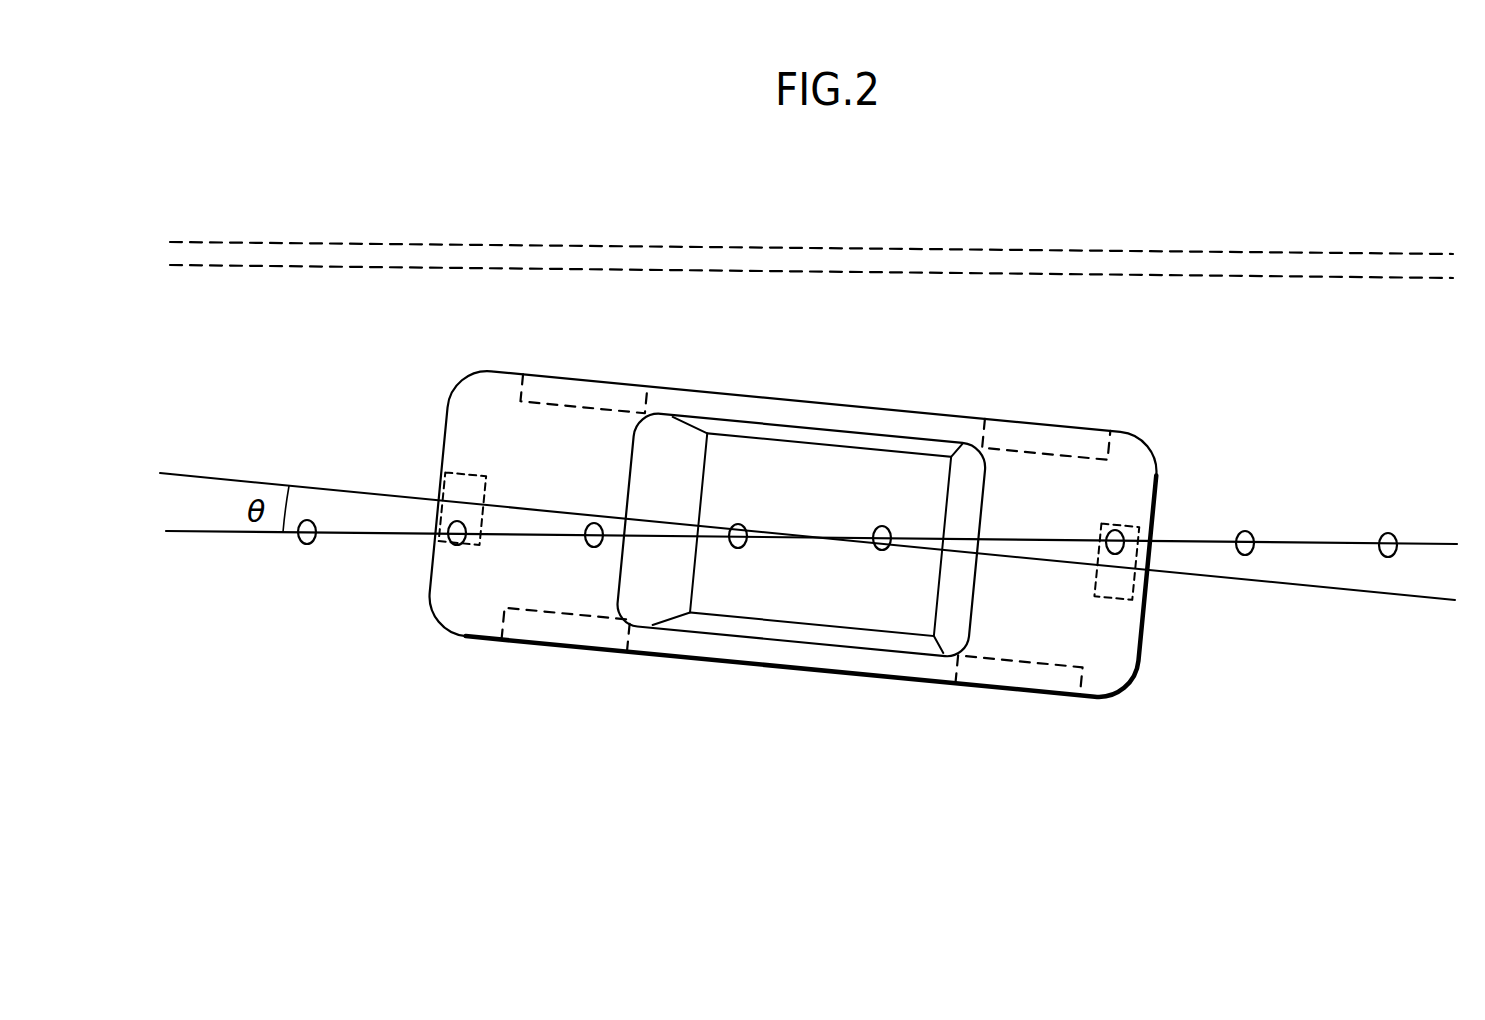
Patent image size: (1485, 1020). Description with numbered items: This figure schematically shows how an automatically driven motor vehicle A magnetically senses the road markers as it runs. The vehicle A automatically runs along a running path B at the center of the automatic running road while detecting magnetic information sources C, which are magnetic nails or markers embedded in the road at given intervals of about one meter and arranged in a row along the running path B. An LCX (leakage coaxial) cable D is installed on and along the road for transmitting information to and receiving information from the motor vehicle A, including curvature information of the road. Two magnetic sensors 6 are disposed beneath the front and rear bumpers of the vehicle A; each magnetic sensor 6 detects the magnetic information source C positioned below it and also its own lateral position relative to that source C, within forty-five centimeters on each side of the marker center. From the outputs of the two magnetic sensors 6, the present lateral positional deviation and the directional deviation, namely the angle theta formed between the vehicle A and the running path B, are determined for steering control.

The automatically driven motor vehicle A is at (890, 403).
The running path B is at (1438, 543).
The magnetic information sources C is at (303, 544).
The LCX cable D is at (1032, 250).
The magnetic sensors 6 is at (465, 468).